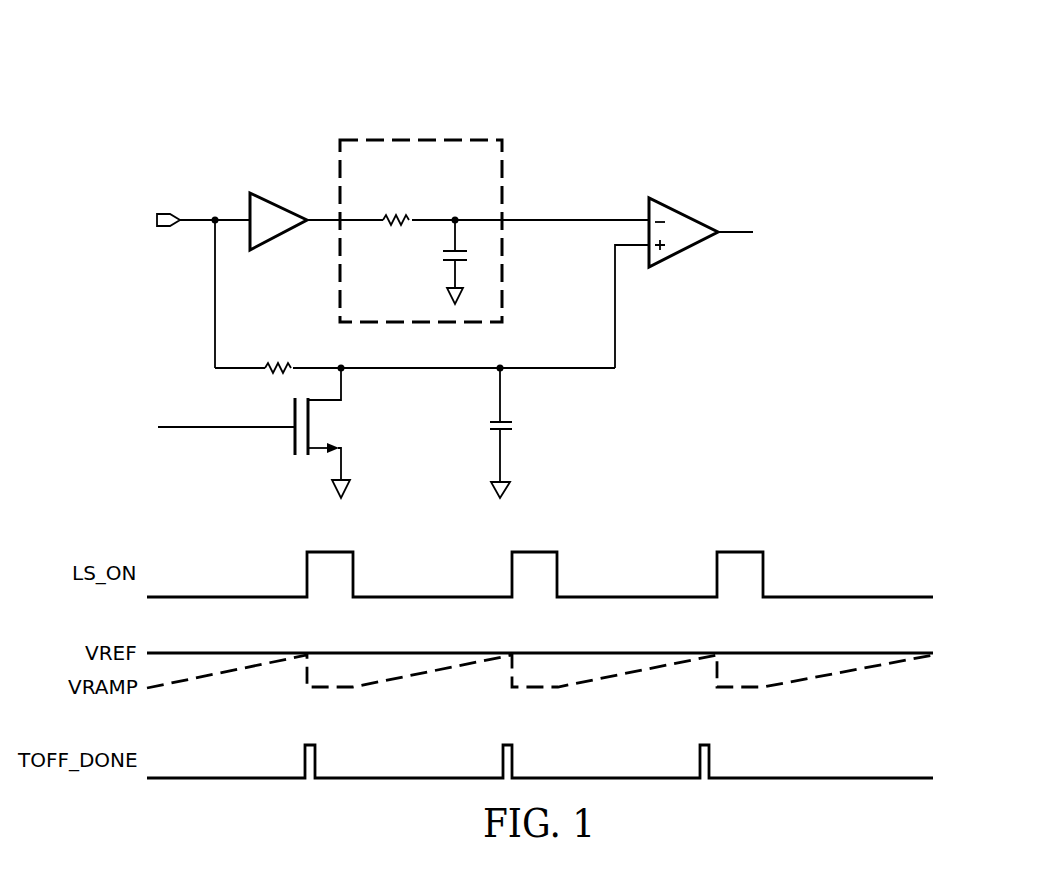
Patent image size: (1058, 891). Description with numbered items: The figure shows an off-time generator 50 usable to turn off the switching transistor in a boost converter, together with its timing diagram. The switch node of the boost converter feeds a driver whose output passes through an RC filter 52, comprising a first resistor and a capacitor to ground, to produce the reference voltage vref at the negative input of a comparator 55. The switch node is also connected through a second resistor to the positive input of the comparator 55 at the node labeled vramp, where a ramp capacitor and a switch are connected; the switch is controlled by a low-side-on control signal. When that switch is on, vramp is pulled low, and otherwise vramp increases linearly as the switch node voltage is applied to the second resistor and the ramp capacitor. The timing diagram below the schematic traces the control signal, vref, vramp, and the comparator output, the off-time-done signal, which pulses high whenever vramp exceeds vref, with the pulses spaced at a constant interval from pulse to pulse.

The off-time generator 50 is at (262, 97).
The RC filter 52 is at (435, 139).
The comparator 55 is at (685, 212).